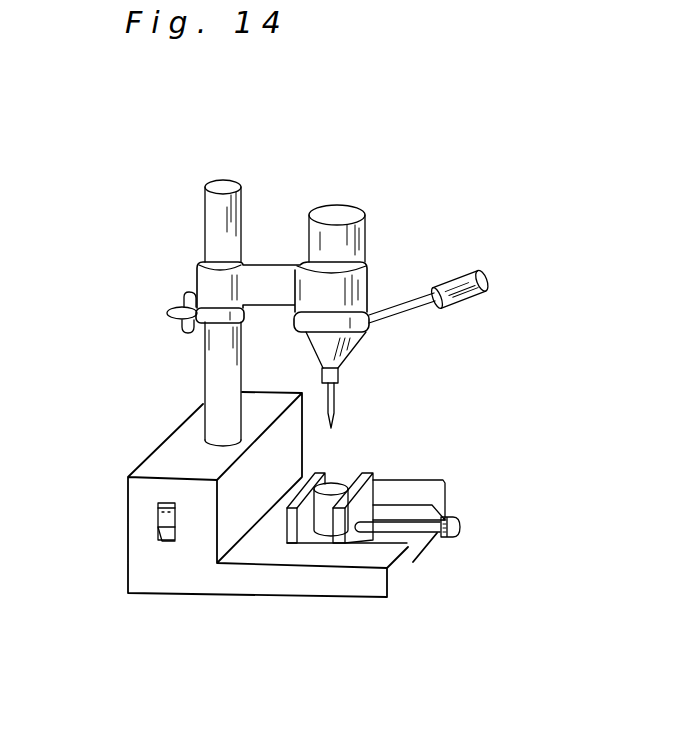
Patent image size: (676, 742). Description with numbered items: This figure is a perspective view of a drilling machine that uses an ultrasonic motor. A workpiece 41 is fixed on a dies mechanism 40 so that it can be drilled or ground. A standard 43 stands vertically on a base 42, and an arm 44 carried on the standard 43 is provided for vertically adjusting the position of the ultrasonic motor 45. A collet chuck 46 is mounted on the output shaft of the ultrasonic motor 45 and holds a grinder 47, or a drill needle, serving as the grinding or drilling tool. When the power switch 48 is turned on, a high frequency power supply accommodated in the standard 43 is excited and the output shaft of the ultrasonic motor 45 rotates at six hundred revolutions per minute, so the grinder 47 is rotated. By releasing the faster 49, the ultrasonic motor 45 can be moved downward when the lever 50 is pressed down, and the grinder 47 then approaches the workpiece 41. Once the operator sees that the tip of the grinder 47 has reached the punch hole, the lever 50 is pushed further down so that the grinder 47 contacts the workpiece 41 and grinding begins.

The dies mechanism 40 is at (363, 505).
The workpiece 41 is at (347, 480).
The base 42 is at (163, 442).
The standard 43 is at (207, 218).
The arm 44 is at (284, 262).
The ultrasonic motor 45 is at (370, 236).
The collet chuck 46 is at (342, 373).
The grinder 47 is at (337, 412).
The power switch 48 is at (152, 530).
The faster 49 is at (166, 315).
The lever 50 is at (479, 278).